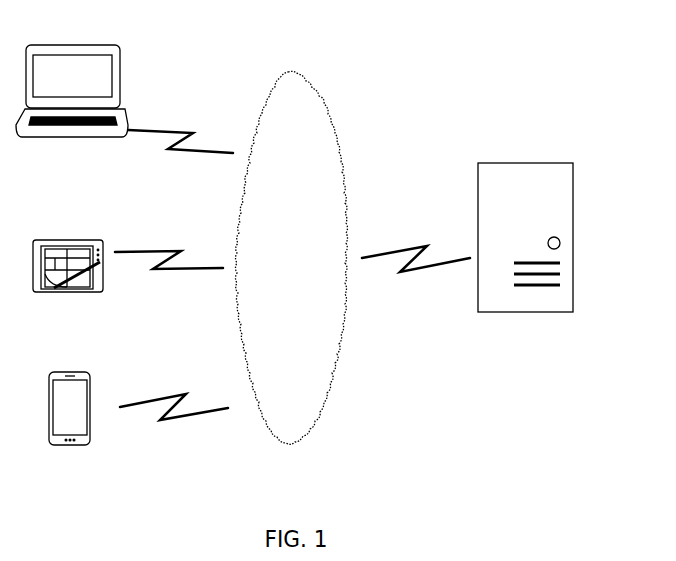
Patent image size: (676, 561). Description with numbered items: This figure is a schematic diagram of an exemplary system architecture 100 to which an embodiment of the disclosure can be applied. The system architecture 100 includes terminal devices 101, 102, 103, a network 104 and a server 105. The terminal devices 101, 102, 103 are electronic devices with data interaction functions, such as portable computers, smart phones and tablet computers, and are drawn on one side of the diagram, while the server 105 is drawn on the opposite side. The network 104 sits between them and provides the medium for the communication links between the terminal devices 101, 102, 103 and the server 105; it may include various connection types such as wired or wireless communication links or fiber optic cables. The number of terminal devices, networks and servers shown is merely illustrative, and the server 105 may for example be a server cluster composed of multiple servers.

The system architecture 100 is at (537, 38).
The terminal device 101 is at (69, 423).
The terminal device 102 is at (68, 287).
The terminal device 103 is at (72, 111).
The network 104 is at (292, 257).
The server 105 is at (525, 254).